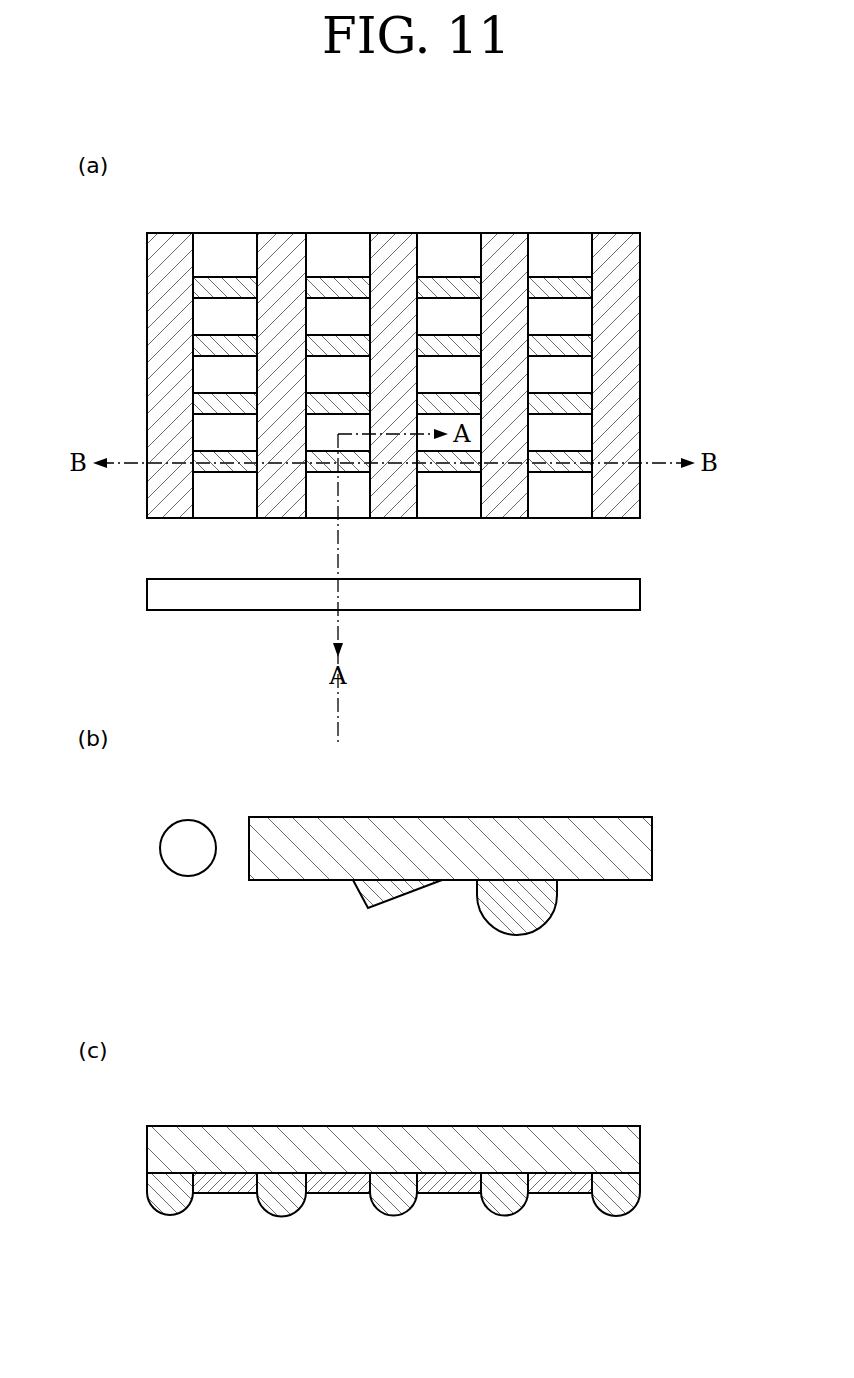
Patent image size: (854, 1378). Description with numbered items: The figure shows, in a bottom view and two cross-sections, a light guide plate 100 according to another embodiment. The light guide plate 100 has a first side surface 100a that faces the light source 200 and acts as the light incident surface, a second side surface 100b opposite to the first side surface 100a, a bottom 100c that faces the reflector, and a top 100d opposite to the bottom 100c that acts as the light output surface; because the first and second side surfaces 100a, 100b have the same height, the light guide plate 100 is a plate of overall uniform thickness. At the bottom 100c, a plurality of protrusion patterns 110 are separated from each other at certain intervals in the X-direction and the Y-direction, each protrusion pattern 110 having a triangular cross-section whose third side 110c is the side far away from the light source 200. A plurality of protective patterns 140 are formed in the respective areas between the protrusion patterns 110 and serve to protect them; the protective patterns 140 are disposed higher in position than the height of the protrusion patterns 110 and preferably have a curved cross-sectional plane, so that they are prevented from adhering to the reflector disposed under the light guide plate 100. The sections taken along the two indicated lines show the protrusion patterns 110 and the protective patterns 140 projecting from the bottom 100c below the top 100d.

The light guide plate 100 is at (640, 372).
The first side surface 100a is at (612, 518).
The second side surface 100b is at (453, 233).
The bottom 100c is at (622, 312).
The top 100d is at (635, 817).
The protrusion pattern 110 is at (335, 290).
The third side 110c is at (559, 249).
The protective pattern 140 is at (279, 258).
The light source 200 is at (640, 592).